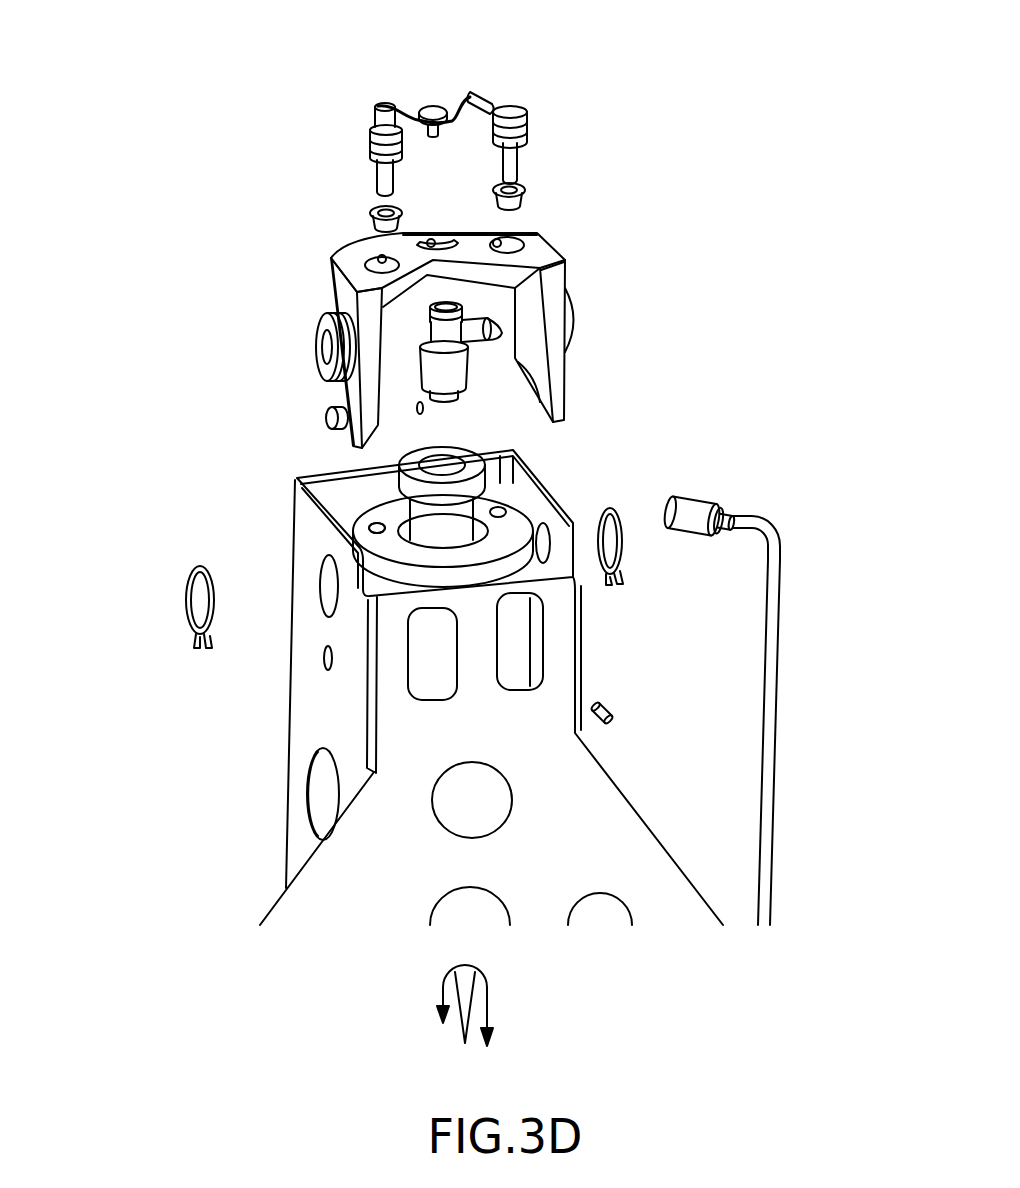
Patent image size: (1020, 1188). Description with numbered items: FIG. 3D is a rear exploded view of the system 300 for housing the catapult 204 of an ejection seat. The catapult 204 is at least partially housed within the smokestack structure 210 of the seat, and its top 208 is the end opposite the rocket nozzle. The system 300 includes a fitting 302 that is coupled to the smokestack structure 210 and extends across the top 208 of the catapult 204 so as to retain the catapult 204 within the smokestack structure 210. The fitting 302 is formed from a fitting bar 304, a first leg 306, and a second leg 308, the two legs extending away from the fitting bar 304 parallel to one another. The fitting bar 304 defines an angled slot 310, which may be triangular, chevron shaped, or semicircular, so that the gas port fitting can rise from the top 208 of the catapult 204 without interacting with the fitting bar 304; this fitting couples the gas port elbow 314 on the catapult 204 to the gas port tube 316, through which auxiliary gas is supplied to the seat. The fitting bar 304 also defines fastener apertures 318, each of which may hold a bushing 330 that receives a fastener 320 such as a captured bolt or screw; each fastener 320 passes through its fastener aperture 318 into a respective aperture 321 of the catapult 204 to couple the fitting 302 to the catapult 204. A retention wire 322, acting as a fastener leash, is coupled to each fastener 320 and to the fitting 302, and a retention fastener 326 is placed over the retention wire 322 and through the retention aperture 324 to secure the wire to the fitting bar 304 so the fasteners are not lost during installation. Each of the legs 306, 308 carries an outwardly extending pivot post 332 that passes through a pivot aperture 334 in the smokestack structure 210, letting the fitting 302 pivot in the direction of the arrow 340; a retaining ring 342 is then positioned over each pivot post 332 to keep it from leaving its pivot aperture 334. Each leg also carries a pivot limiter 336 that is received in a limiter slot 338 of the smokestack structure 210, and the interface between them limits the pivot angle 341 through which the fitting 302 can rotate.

The catapult 204 is at (523, 560).
The top 208 is at (515, 522).
The smokestack structure 210 is at (295, 727).
The system 300 is at (268, 162).
The fitting 302 is at (568, 282).
The fitting bar 304 is at (378, 254).
The first leg 306 is at (343, 393).
The second leg 308 is at (565, 365).
The angled slot 310 is at (460, 262).
The gas port elbow 314 is at (457, 378).
The gas port tube 316 is at (755, 537).
The fastener aperture 318 is at (518, 240).
The fastener 320 is at (377, 173).
The aperture 321 is at (370, 528).
The retention wire 322 is at (472, 95).
The retention aperture 324 is at (429, 240).
The retention fastener 326 is at (433, 107).
The bushing 330 is at (532, 185).
The pivot post 332 is at (317, 327).
The pivot aperture 334 is at (326, 600).
The pivot limiter 336 is at (327, 425).
The limiter slot 338 is at (317, 667).
The arrow 340 is at (488, 1003).
The pivot angle 341 is at (463, 1035).
The retaining ring 342 is at (182, 603).